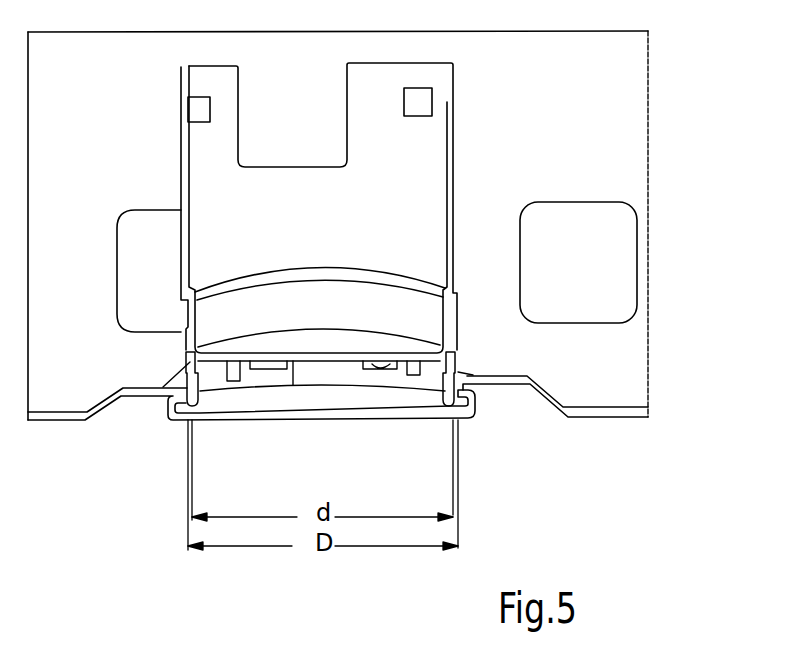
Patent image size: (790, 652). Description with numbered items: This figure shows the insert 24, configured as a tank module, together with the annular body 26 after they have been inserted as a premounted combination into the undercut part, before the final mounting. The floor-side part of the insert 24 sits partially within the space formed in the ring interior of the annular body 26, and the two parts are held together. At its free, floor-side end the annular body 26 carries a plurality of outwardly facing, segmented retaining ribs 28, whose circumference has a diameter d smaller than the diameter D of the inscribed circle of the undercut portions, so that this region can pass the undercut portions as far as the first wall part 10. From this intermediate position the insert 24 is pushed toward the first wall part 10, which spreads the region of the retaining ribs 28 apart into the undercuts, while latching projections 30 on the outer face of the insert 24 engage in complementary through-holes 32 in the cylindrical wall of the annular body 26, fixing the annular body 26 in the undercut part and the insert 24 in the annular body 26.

The first wall part 10 is at (62, 420).
The insert 24 is at (448, 160).
The annular body 26 is at (458, 355).
The retaining ribs 28 is at (197, 400).
The latching projections 30 is at (453, 326).
The through-holes 32 is at (390, 367).